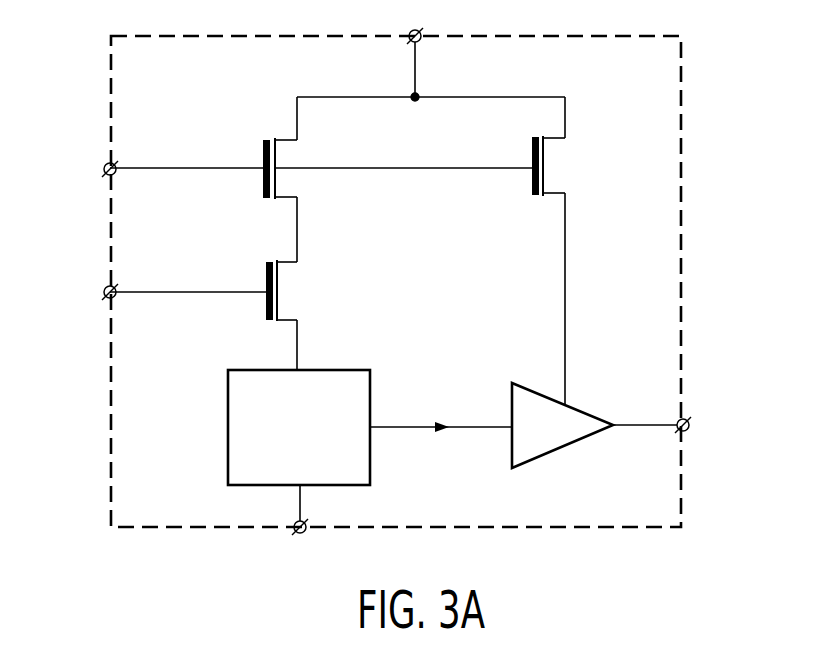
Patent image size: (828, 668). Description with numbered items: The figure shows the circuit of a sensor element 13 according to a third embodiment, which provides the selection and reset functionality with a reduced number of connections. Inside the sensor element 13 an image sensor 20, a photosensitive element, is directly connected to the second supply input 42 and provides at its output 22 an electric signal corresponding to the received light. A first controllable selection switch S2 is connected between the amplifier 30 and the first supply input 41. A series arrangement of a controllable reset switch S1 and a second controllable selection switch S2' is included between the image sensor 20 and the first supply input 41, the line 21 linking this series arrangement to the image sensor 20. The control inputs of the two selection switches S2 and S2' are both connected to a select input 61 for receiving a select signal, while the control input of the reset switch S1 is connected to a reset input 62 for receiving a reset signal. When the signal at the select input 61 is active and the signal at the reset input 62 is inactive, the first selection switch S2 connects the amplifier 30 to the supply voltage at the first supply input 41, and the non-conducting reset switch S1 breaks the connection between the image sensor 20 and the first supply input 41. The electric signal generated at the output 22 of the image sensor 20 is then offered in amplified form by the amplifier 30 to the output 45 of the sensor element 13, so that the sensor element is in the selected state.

The sensor element 13 is at (681, 77).
The image sensor 20 is at (308, 438).
The input line of block 20 21 is at (299, 368).
The output of the image sensor 22 is at (372, 425).
The amplifier 30 is at (551, 437).
The first supply input 41 is at (410, 33).
The second supply input 42 is at (306, 533).
The output of the sensor element 45 is at (690, 427).
The select input 61 is at (103, 166).
The reset input 62 is at (103, 289).
The controllable reset switch S1 is at (293, 285).
The first controllable selection switch S2 is at (570, 166).
The second controllable selection switch S2' is at (304, 171).